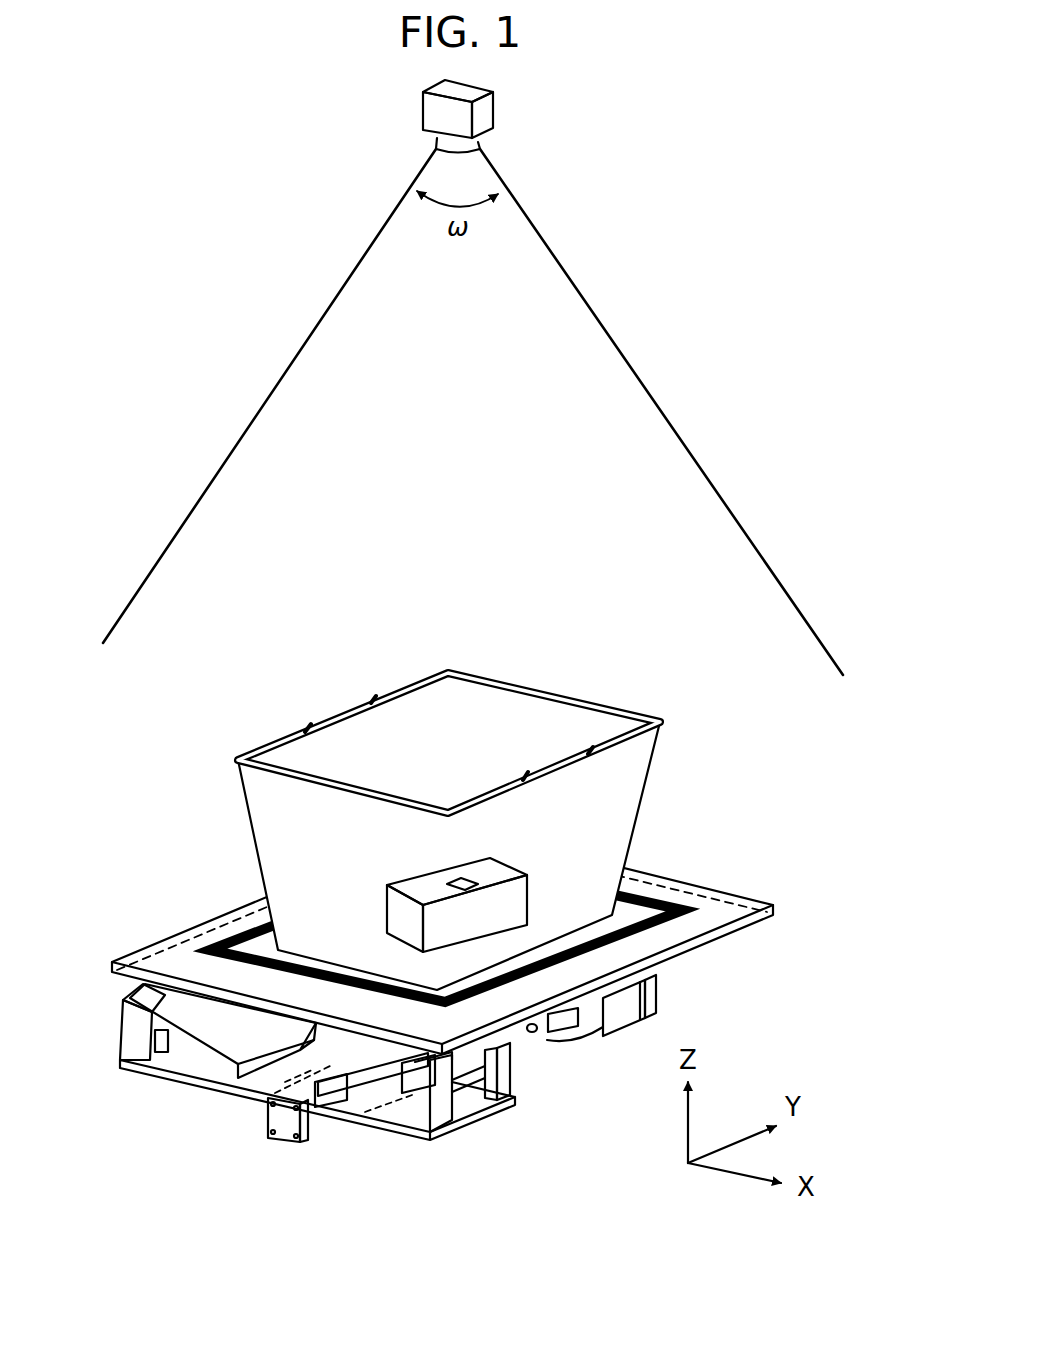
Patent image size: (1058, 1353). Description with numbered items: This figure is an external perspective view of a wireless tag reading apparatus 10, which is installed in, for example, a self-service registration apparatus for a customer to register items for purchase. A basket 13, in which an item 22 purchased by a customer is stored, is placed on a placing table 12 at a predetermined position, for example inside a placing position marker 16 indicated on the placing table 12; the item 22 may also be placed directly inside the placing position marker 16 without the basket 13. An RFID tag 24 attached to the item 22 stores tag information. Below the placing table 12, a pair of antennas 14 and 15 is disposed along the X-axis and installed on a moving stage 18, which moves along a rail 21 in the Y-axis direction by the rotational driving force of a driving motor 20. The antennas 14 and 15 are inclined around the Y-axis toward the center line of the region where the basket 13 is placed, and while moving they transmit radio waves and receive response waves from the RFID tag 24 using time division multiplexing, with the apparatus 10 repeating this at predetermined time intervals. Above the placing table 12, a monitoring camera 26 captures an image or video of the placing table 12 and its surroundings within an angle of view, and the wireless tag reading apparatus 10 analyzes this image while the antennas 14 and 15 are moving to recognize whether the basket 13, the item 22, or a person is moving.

The wireless tag reading apparatus 10 is at (669, 125).
The monitoring camera 26 is at (496, 108).
The basket 13 is at (652, 762).
The item 22 is at (483, 872).
The RFID tag 24 is at (460, 882).
The placing table 12 is at (750, 898).
The placing position marker 16 is at (638, 900).
The driving motor 20 is at (658, 992).
The antenna 14 is at (188, 1040).
The antenna 15 is at (382, 1072).
The moving stage 18 is at (493, 1110).
The rail 21 is at (310, 1147).